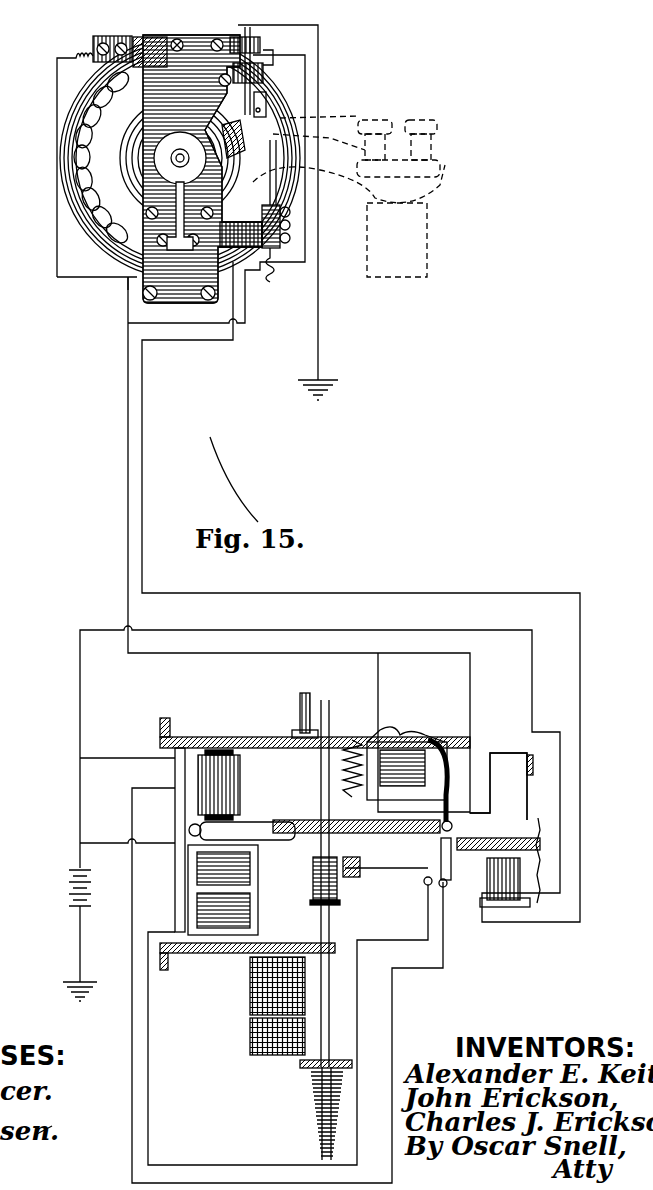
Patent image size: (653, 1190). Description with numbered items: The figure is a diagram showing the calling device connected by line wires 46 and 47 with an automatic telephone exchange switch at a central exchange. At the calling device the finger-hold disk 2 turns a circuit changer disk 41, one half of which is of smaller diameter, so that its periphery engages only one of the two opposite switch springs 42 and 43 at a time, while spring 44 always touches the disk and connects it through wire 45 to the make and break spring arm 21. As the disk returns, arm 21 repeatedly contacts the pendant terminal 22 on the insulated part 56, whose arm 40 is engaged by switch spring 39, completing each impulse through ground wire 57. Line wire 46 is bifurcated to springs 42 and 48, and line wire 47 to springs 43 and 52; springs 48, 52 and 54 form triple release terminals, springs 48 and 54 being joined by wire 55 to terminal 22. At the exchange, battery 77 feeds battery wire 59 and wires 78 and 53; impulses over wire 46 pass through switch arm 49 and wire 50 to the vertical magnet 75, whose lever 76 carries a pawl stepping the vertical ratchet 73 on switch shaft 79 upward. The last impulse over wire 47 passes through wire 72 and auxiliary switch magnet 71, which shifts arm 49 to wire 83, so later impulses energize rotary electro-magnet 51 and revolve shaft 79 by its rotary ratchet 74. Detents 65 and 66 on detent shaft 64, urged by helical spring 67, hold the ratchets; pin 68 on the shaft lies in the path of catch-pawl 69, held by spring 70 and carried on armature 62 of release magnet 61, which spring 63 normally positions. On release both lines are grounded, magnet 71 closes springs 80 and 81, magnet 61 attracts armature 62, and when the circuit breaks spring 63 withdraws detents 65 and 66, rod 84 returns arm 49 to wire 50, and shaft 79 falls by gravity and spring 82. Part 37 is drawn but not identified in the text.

The finger-hold disk 2 is at (95, 248).
The make and break spring arm 21 is at (159, 42).
The pendant terminal 22 is at (263, 112).
The key body 37 is at (397, 240).
The switch spring 39 is at (267, 89).
The arm 40 is at (197, 169).
The circuit changer disk 41 is at (176, 158).
The switch spring 42 is at (169, 158).
The switch spring 43 is at (241, 218).
The spring 44 is at (160, 281).
The wire 45 is at (98, 278).
The line wire 46 is at (128, 440).
The line wire 47 is at (165, 505).
The switch spring 48 is at (283, 141).
The circuit changer switch arm 49 is at (462, 862).
The wire 50 is at (447, 968).
The rotary electro-magnet 51 is at (222, 905).
The switch spring 52 is at (277, 268).
The wire 53 is at (100, 843).
The switch spring 54 is at (265, 165).
The wire 55 is at (280, 150).
The insulated part 56 is at (247, 22).
The ground wire 57 is at (327, 27).
The battery wire 59 is at (560, 655).
The release magnet 61 is at (407, 771).
The armature 62 is at (455, 740).
The spring 63 is at (396, 728).
The detent shaft 64 is at (370, 835).
The detent 65 is at (332, 740).
The detent 66 is at (358, 870).
The helical spring 67 is at (353, 740).
The pin 68 is at (385, 835).
The catch-pawl 69 is at (397, 835).
The spring 70 is at (457, 782).
The auxiliary switch magnet 71 is at (530, 886).
The wire 72 is at (560, 822).
The vertical ratchet 73 is at (320, 795).
The rotary ratchet 74 is at (343, 895).
The vertical magnet 75 is at (212, 752).
The lever 76 is at (257, 810).
The battery 77 is at (67, 878).
The wire 78 is at (105, 758).
The switch shaft 79 is at (305, 653).
The spring 80 is at (538, 778).
The spring 81 is at (542, 795).
The spring 82 is at (318, 1100).
The wire 83 is at (357, 997).
The rod 84 is at (292, 1021).